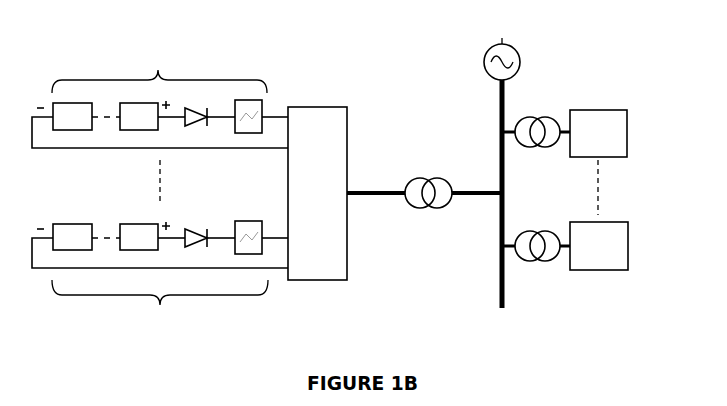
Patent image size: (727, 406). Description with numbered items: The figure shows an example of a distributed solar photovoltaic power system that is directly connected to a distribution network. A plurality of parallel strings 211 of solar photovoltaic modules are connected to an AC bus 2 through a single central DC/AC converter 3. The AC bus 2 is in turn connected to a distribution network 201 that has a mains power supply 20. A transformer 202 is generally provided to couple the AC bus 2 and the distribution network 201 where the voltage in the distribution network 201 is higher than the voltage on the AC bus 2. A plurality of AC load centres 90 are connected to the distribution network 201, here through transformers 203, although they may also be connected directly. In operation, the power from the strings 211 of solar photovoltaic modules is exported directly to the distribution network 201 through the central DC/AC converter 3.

The parallel strings of solar photovoltaic modules 211 is at (159, 61).
The central DC/AC converter 3 is at (318, 105).
The AC bus 2 is at (392, 189).
The transformer 202 is at (433, 167).
The mains power supply 20 is at (524, 61).
The distribution network 201 is at (508, 213).
The transformers 203 is at (542, 105).
The AC load centres 90 is at (633, 133).